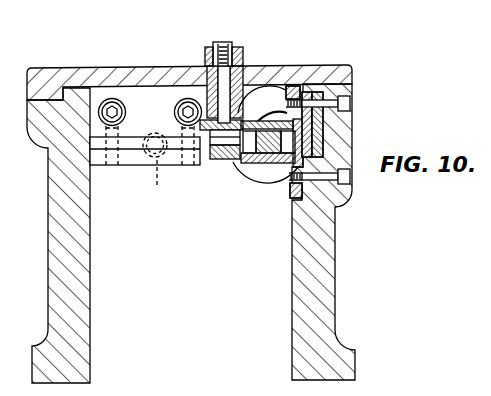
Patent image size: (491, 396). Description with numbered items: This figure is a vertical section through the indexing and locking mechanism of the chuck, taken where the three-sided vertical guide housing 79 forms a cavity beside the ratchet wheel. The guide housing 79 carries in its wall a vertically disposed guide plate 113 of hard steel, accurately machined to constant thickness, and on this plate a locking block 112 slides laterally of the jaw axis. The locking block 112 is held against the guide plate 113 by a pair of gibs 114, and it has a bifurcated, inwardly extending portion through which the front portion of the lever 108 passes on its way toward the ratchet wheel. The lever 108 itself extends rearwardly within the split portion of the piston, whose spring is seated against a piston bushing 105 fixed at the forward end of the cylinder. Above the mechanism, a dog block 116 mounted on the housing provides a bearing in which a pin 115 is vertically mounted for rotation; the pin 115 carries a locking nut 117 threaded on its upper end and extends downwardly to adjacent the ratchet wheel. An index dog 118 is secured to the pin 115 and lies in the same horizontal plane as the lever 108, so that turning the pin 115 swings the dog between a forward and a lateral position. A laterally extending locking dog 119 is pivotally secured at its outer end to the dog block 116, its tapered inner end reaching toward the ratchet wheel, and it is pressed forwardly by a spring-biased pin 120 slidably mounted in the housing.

The guide housing 79 is at (48, 252).
The piston bushing 105 is at (268, 87).
The lever 108 is at (263, 164).
The locking block 112 is at (262, 189).
The guide plate 113 is at (323, 138).
The gibs 114 is at (294, 94).
The pin 115 is at (218, 43).
The dog block 116 is at (177, 128).
The locking nut 117 is at (241, 50).
The index dog 118 is at (247, 127).
The locking dog 119 is at (130, 150).
The pin 120 is at (158, 181).